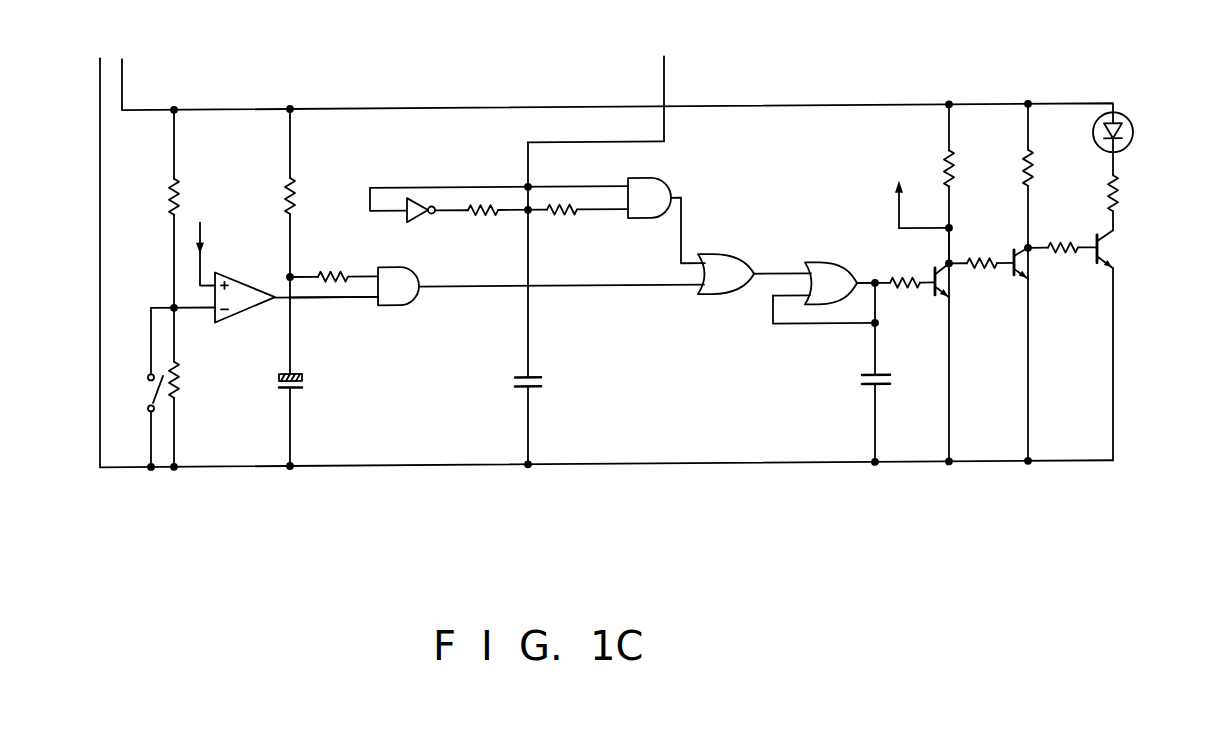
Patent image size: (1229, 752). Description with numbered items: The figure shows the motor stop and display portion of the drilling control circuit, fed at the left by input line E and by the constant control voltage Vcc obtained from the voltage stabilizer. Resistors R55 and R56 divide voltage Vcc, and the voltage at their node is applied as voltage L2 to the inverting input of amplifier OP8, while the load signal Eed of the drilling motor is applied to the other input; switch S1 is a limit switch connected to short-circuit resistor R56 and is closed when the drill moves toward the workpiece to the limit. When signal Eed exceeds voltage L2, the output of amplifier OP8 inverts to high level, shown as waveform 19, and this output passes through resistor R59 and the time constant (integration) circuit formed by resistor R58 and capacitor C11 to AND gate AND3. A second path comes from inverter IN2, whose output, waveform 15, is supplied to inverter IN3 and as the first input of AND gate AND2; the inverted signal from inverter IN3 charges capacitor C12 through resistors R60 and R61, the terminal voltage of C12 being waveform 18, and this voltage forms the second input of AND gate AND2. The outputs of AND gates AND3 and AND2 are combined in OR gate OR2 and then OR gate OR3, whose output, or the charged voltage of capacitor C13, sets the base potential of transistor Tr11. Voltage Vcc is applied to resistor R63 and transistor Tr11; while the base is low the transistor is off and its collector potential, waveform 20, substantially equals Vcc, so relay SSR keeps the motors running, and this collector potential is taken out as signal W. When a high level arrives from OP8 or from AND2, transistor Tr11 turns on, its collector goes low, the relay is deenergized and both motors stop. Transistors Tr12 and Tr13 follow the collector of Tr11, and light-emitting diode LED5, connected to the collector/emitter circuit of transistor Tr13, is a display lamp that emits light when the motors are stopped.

The input line E is at (98, 87).
The control voltage Vcc is at (124, 79).
The resistor R55 is at (146, 209).
The resistor R56 is at (202, 386).
The signal Eed is at (202, 232).
The switch S1 is at (146, 388).
The amplifier OP8 is at (244, 316).
The resistor R58 is at (316, 241).
The capacitor C11 is at (305, 387).
The resistor R59 is at (334, 262).
The waveform 19 is at (320, 301).
The AND gate AND3 is at (395, 309).
The waveform 15 is at (566, 147).
The inverter IN2 is at (666, 92).
The waveform 18 is at (532, 349).
The capacitor C12 is at (543, 389).
The inverter IN3 is at (410, 226).
The resistor R60 is at (502, 224).
The resistor R61 is at (586, 224).
The AND gate AND2 is at (655, 191).
The OR gate OR2 is at (720, 264).
The OR gate OR3 is at (824, 270).
The capacitor C13 is at (862, 389).
The transistor Tr11 is at (942, 302).
The resistor R63 is at (977, 282).
The output signal W is at (918, 192).
The waveform 20 is at (951, 262).
The transistor Tr12 is at (1017, 287).
The transistor Tr13 is at (1100, 264).
The light-emitting diode LED5 is at (1141, 114).